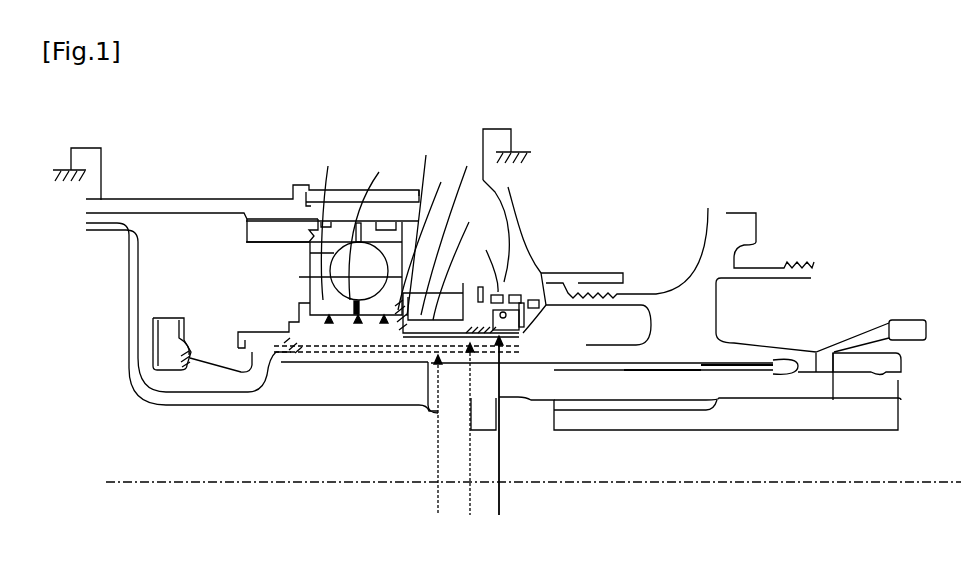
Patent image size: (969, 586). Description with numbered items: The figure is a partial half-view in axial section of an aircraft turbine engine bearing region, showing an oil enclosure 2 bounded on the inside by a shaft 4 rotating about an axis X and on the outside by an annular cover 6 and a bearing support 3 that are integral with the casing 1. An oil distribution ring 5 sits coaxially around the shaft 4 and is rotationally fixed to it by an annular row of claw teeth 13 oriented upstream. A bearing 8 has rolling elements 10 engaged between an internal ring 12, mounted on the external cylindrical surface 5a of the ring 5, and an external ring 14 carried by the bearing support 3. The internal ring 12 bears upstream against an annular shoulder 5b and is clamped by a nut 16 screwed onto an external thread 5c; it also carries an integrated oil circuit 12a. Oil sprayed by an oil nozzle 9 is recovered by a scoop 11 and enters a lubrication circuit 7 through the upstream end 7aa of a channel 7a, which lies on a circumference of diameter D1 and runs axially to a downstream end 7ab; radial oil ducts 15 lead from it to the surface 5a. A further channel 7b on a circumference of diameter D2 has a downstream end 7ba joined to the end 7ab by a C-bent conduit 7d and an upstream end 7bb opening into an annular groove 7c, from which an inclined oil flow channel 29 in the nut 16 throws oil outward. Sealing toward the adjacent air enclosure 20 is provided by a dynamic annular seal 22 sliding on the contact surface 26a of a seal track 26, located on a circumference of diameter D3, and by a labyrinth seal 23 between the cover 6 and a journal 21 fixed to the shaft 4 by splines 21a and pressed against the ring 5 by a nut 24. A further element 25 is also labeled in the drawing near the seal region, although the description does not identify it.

The casing 1 is at (87, 147).
The oil enclosure 2 is at (202, 233).
The bearing support 3 is at (223, 198).
The shaft 4 is at (288, 400).
The oil distribution ring 5 is at (347, 364).
The external cylindrical surface 5a is at (357, 323).
The annular shoulder 5b is at (297, 303).
The external thread 5c is at (457, 296).
The annular cover 6 is at (500, 205).
The lubrication circuit 7 is at (392, 356).
The channel 7a is at (427, 366).
The upstream end 7aa is at (300, 355).
The downstream end 7ab is at (510, 387).
The further channel 7b is at (452, 385).
The downstream end 7ba is at (527, 295).
The upstream end 7bb is at (459, 263).
The annular groove 7c is at (423, 239).
The C-bent conduit 7d is at (525, 347).
The bearing 8 is at (267, 270).
The oil nozzle 9 is at (153, 360).
The rolling elements 10 is at (312, 278).
The scoop 11 is at (250, 331).
The internal ring 12 is at (309, 298).
The integrated oil circuit 12a is at (378, 232).
The claw teeth 13 is at (279, 358).
The external ring 14 is at (368, 228).
The oil ducts 15 is at (327, 323).
The nut 16 is at (479, 286).
The air enclosure 20 is at (583, 223).
The journal 21 is at (716, 303).
The splines 21a is at (745, 362).
The dynamic annular seal 22 is at (550, 315).
The labyrinth seal 23 is at (628, 290).
The nut 24 is at (847, 362).
The snap ring 25 is at (505, 293).
The seal track 26 is at (440, 412).
The contact surface 26a is at (550, 338).
The oil flow channel 29 is at (448, 233).
The axis X is at (141, 484).
The diameter D1 is at (441, 470).
The diameter D2 is at (472, 470).
The diameter D3 is at (501, 470).